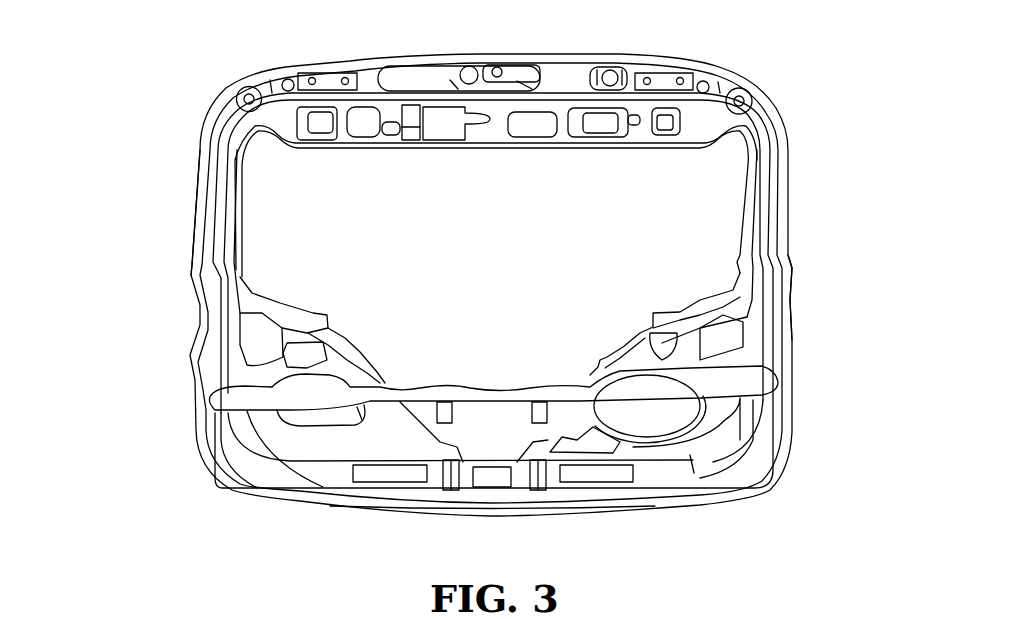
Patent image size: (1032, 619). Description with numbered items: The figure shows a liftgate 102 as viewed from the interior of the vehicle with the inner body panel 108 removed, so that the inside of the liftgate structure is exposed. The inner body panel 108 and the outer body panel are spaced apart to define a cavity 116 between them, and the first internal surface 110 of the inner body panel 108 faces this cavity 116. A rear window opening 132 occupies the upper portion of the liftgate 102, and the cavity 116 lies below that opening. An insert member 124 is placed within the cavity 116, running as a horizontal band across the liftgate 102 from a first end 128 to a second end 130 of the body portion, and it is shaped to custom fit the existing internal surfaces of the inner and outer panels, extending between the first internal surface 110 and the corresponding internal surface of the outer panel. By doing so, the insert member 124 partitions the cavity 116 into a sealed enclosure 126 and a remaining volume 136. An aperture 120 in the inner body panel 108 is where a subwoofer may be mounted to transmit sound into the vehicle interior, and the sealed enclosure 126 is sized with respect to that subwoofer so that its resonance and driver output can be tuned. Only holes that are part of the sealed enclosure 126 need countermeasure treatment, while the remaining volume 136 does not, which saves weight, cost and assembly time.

The liftgate 102 is at (188, 86).
The inner body panel 108 is at (190, 207).
The first internal surface 110 is at (650, 332).
The rear window opening 132 is at (694, 206).
The second end 130 is at (780, 344).
The remaining volume 136 is at (172, 275).
The cavity 116 is at (90, 288).
The first end 128 is at (192, 415).
The insert member 124 is at (289, 414).
The aperture 120 is at (650, 414).
The sealed enclosure 126 is at (810, 373).